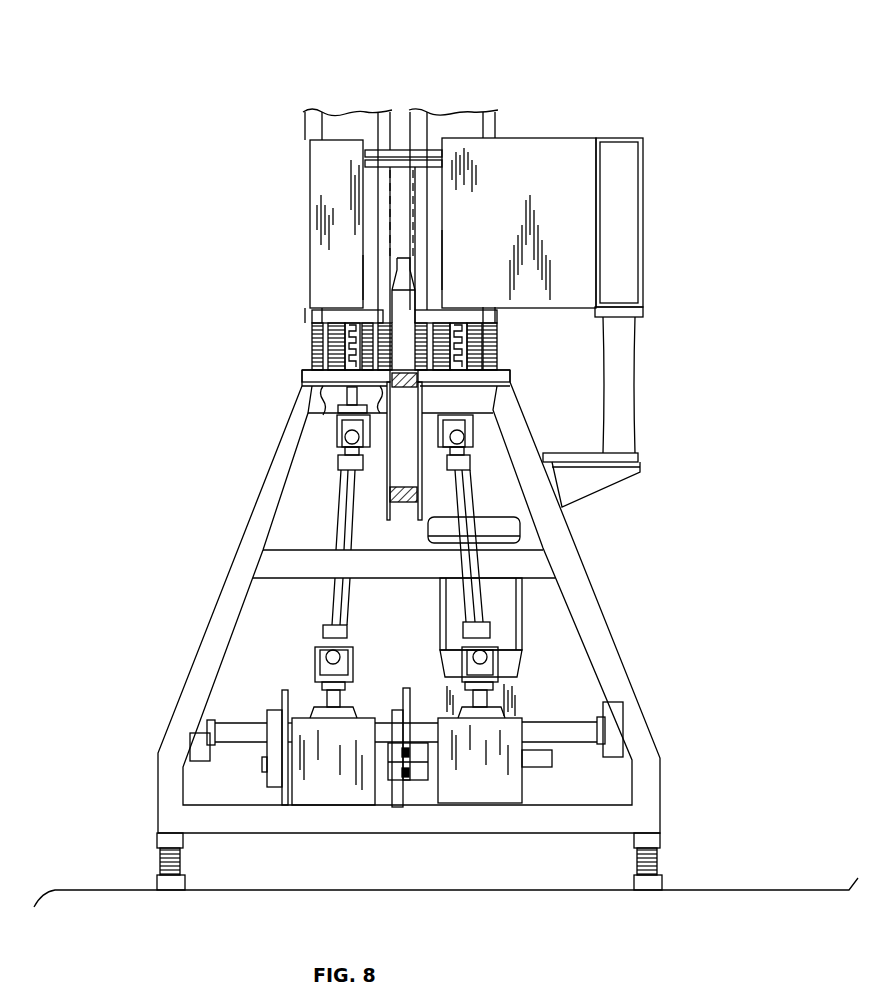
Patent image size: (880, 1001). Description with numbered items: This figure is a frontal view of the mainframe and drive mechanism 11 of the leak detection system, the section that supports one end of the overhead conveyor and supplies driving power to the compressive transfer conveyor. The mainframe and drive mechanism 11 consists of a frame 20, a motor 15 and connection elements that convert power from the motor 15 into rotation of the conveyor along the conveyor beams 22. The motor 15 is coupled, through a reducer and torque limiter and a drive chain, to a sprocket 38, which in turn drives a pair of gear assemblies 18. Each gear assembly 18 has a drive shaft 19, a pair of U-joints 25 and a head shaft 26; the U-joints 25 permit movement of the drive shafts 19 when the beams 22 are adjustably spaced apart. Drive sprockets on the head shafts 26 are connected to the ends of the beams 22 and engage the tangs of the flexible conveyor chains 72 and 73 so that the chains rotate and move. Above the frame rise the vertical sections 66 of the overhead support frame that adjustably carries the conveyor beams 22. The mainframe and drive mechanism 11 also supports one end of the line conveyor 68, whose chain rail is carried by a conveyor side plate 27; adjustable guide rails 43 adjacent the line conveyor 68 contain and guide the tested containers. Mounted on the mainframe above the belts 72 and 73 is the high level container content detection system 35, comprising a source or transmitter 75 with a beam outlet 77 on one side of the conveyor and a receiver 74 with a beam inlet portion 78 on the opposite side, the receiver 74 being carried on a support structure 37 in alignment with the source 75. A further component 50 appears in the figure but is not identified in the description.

The mainframe and drive mechanism 11 is at (153, 372).
The motor 15 is at (440, 624).
The gear assembly 18 is at (518, 703).
The drive shaft 19 is at (467, 516).
The frame 20 is at (618, 692).
The conveyor beams 22 is at (455, 108).
The U-joints 25 is at (333, 475).
The head shaft 26 is at (348, 396).
The conveyor side plate 27 is at (375, 512).
The high level container content detection system 35 is at (697, 121).
The support structure 37 is at (683, 357).
The sprocket 38 is at (283, 690).
The adjustable guide rails 43 is at (310, 348).
The nozzle 50 is at (407, 257).
The vertical sections 66 is at (318, 92).
The line conveyor 68 is at (402, 386).
The flexible conveyor chain 72 is at (497, 345).
The flexible conveyor chain 73 is at (312, 335).
The receiver 74 is at (532, 155).
The source 75 is at (322, 176).
The beam outlet 77 is at (443, 262).
The beam inlet portion 78 is at (363, 274).